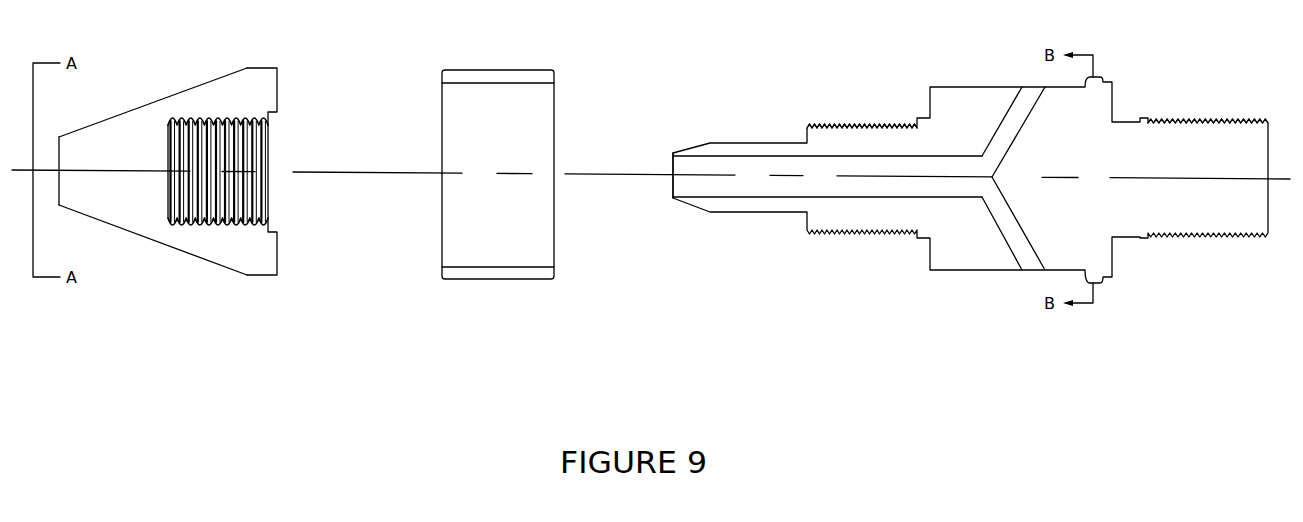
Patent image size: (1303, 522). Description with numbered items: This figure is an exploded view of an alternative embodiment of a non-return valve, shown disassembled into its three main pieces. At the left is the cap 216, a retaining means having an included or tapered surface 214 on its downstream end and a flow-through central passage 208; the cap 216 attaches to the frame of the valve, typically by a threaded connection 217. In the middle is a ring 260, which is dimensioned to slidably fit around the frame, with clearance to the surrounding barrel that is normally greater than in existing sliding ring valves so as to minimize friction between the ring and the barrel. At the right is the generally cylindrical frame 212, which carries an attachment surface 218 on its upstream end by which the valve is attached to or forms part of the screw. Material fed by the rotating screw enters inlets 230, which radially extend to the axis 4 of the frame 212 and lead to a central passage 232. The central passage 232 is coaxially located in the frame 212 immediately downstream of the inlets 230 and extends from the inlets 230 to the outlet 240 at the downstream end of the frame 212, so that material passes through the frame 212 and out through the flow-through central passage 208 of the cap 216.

The flow-through central passage 208 is at (168, 176).
The cap 216 is at (195, 80).
The tapered surface 214 is at (195, 268).
The ring 260 is at (516, 60).
The axis 4 is at (461, 172).
The frame 212 is at (946, 81).
The threaded connection 217 is at (843, 119).
The attachment surface 218 is at (1205, 115).
The central passage 232 is at (794, 196).
The inlets 230 is at (1028, 79).
The outlet 240 is at (665, 165).